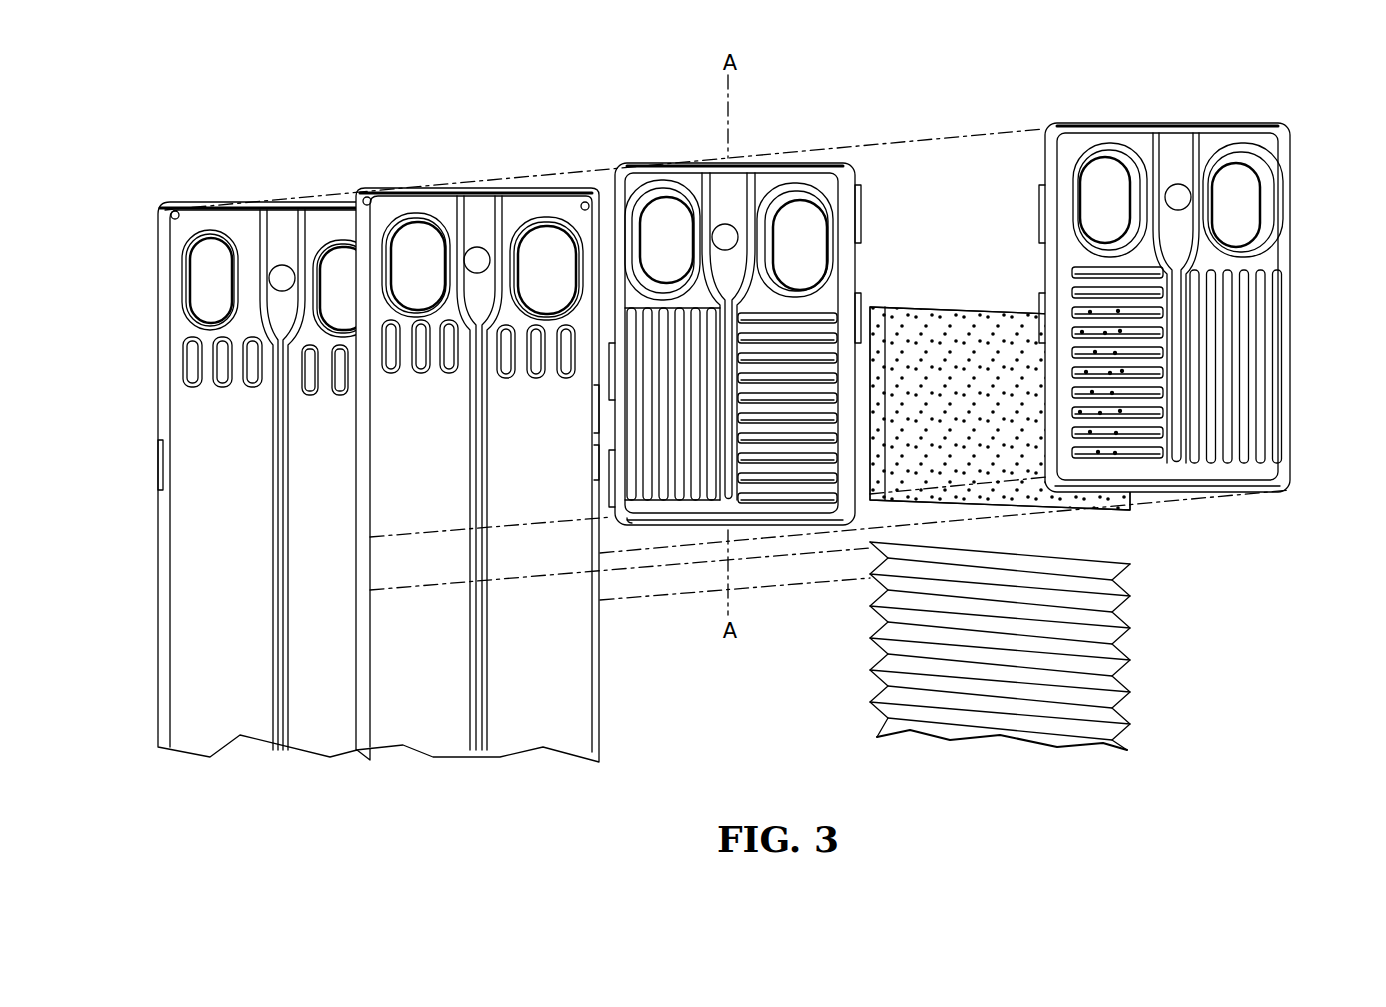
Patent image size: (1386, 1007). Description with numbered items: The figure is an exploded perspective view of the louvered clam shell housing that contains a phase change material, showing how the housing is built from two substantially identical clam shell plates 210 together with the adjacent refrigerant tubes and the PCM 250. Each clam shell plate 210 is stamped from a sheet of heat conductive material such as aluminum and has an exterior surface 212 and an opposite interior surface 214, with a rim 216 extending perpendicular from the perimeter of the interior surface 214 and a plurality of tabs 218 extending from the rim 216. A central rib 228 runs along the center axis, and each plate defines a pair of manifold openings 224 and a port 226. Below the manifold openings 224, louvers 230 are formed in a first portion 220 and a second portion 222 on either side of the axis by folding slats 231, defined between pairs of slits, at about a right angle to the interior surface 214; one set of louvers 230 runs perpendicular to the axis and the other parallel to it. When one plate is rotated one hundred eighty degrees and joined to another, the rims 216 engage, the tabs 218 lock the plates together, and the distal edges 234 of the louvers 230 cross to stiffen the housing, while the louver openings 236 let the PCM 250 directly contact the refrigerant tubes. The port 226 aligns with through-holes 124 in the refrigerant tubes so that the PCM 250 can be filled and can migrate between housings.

The through-holes 124 is at (476, 258).
The clam shell plates 210 is at (993, 371).
The exterior surface 212 is at (1282, 258).
The interior surface 214 is at (823, 300).
The rim 216 is at (822, 177).
The tabs 218 is at (858, 242).
The first portion 220 is at (658, 532).
The second portion 222 is at (811, 538).
The manifold openings 224 is at (658, 215).
The port 226 is at (728, 243).
The central rib 228 is at (1180, 410).
The louvers 230 is at (1266, 360).
The slats 231 is at (685, 483).
The distal edges 234 is at (822, 405).
The louver openings 236 is at (1274, 312).
The PCM 250 is at (1068, 492).